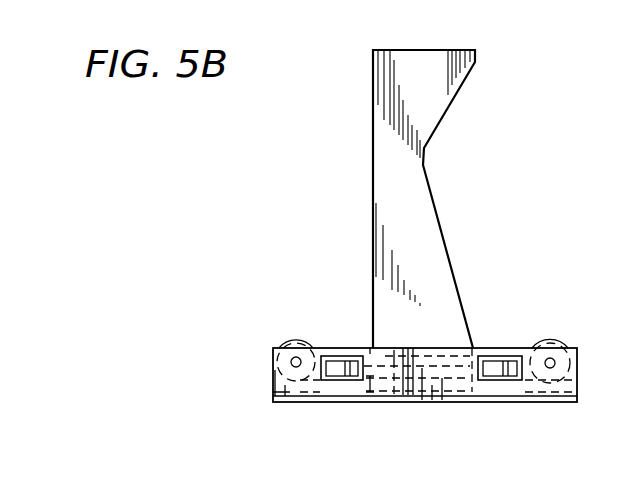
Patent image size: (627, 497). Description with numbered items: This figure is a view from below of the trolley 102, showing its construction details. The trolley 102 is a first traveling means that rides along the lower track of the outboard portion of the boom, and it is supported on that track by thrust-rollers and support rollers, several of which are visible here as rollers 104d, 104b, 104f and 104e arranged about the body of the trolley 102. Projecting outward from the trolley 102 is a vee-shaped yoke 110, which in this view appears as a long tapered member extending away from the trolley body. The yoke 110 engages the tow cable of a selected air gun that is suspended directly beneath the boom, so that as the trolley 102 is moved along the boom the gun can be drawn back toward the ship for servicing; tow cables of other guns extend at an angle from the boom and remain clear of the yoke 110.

The yoke 110 is at (441, 97).
The trolley 102 is at (272, 380).
The roller 104d is at (293, 340).
The roller 104b is at (549, 341).
The roller 104f is at (352, 366).
The roller 104e is at (515, 366).